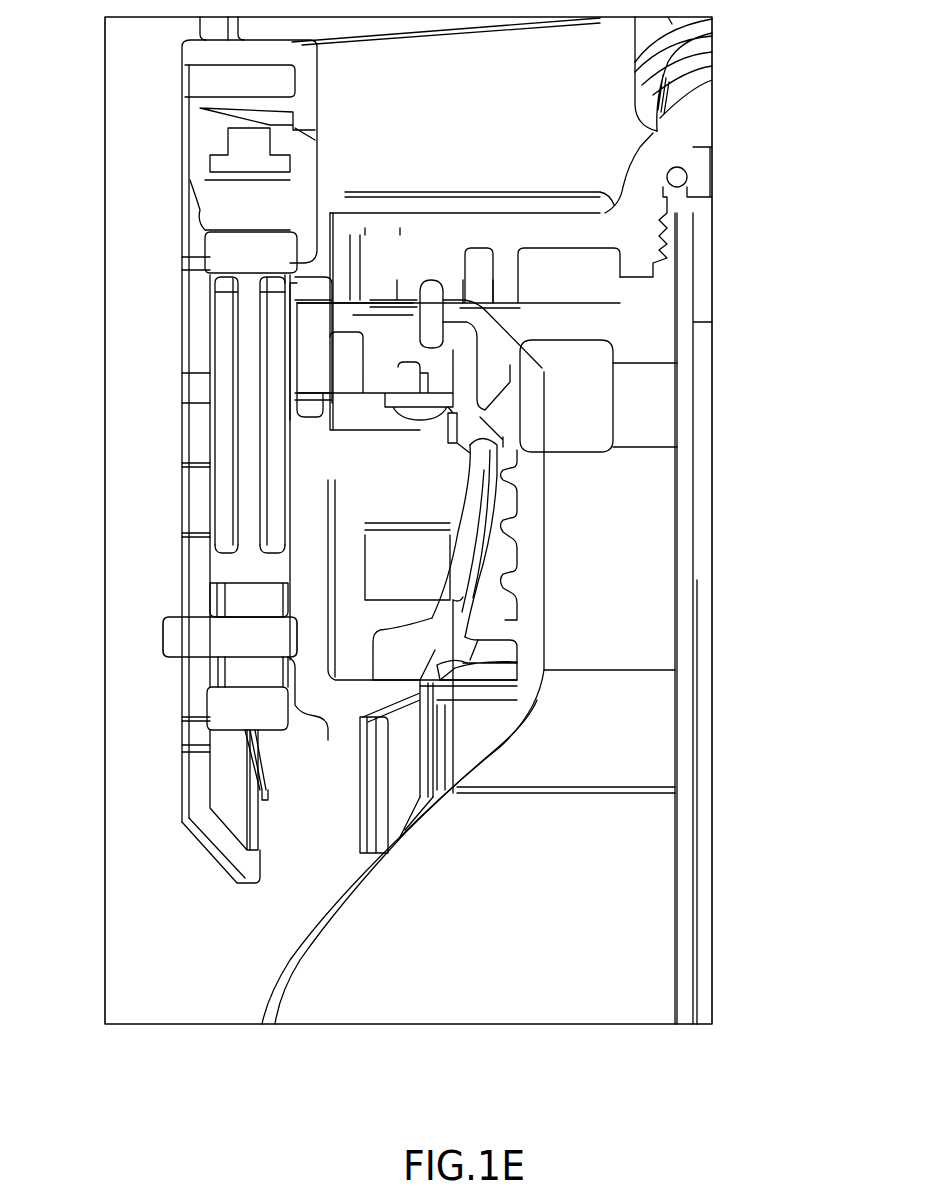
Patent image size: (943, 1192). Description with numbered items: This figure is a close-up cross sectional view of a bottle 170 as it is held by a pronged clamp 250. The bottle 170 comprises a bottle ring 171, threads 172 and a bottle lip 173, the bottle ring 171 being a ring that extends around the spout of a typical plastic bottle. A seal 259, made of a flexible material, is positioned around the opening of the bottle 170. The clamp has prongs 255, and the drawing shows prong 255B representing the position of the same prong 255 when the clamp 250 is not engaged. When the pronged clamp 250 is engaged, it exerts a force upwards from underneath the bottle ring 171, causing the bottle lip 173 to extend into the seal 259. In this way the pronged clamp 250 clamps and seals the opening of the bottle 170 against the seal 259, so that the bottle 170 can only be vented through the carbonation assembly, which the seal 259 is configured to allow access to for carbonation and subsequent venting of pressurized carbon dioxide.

The bottle 170 is at (513, 730).
The bottle ring 171 is at (500, 622).
The threads 172 is at (513, 582).
The bottle lip 173 is at (545, 372).
The pronged clamp 250 is at (478, 505).
The prong 255 is at (410, 630).
The prong 255B is at (463, 597).
The seal 259 is at (592, 368).